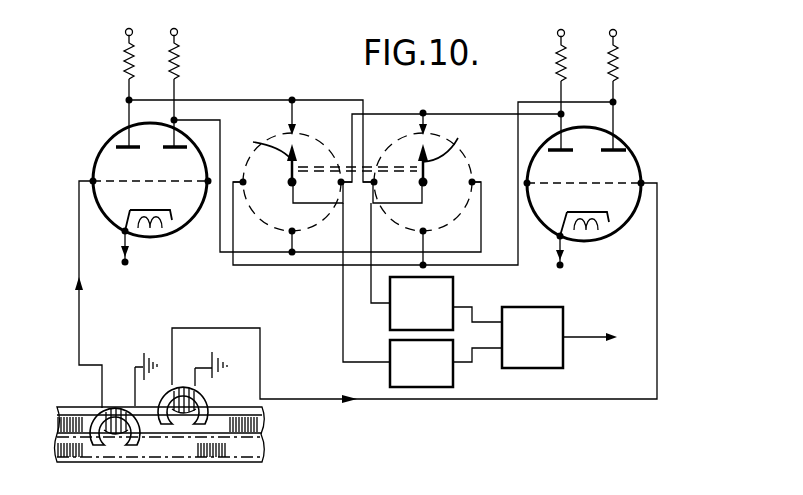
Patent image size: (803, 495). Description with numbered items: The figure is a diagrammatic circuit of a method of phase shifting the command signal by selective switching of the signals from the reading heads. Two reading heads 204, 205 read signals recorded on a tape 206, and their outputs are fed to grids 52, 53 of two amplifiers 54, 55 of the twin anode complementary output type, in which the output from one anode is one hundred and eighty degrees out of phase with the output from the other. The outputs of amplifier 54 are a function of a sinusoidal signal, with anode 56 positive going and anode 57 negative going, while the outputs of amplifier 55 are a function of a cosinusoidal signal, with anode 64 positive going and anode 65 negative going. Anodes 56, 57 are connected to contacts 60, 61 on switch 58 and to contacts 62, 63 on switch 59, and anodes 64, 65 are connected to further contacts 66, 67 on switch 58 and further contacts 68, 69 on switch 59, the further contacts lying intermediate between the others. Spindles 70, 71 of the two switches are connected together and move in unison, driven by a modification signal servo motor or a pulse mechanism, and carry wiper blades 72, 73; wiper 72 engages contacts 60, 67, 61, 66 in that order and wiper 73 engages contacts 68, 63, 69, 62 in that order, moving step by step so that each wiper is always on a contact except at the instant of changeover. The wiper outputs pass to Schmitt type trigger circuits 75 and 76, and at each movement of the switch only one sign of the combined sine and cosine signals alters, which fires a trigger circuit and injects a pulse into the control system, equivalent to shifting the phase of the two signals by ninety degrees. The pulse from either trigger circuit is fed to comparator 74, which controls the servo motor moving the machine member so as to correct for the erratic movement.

The grid 52 is at (165, 181).
The grid 53 is at (577, 189).
The amplifier 54 is at (127, 150).
The amplifier 55 is at (630, 151).
The anode 56 is at (94, 166).
The anode 57 is at (180, 144).
The switch 58 is at (331, 147).
The switch 59 is at (407, 133).
The contact 60 is at (289, 131).
The contact 61 is at (290, 234).
The contact 62 is at (375, 183).
The contact 63 is at (473, 181).
The anode 64 is at (554, 155).
The anode 65 is at (609, 133).
The contact 66 is at (245, 185).
The contact 67 is at (340, 184).
The contact 68 is at (426, 130).
The contact 69 is at (425, 233).
The spindle 70 is at (289, 182).
The spindle 71 is at (427, 183).
The wiper blade 72 is at (259, 151).
The wiper blade 73 is at (455, 147).
The comparator 74 is at (565, 316).
The trigger circuit 75 is at (389, 312).
The trigger circuit 76 is at (454, 377).
The reading head 204 is at (137, 447).
The reading head 205 is at (206, 403).
The tape 206 is at (263, 442).